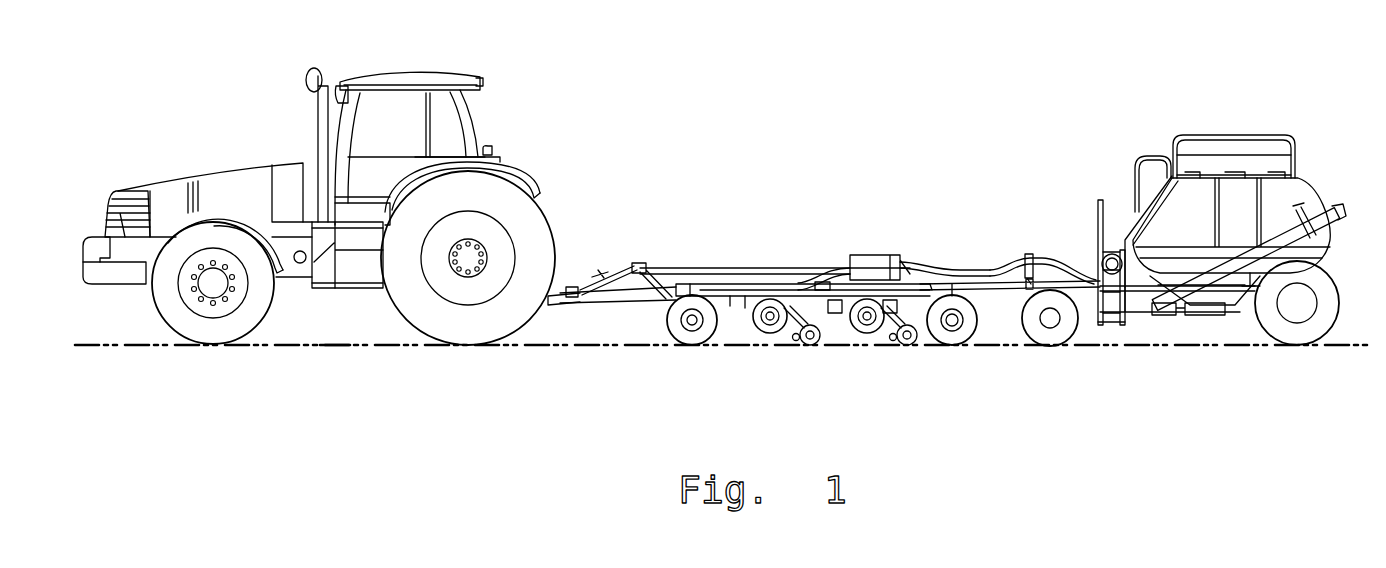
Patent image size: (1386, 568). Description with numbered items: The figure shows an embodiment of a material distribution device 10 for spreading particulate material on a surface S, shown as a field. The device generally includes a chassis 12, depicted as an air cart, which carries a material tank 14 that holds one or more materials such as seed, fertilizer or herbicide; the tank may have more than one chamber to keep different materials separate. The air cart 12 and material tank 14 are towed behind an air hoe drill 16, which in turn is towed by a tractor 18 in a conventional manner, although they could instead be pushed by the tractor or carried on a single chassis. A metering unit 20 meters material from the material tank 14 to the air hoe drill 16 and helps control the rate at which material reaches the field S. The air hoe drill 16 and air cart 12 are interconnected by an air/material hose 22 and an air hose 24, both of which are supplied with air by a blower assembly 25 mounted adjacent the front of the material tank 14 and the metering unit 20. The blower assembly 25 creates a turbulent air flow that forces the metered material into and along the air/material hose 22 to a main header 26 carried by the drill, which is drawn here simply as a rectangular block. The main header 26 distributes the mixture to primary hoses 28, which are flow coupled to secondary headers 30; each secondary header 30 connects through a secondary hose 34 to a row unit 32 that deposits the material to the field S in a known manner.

The material distribution device 10 is at (1013, 162).
The chassis 12 is at (1261, 124).
The material tank 14 is at (1302, 196).
The air hoe drill 16 is at (763, 228).
The tractor 18 is at (276, 111).
The metering unit 20 is at (1254, 291).
The air/material hose 22 is at (994, 268).
The air hose 24 is at (910, 262).
The blower assembly 25 is at (1100, 251).
The main header 26 is at (880, 255).
The primary hoses 28 is at (843, 270).
The secondary headers 30 is at (822, 276).
The row unit 32 is at (892, 356).
The secondary hose 34 is at (774, 284).
The surface s is at (335, 346).